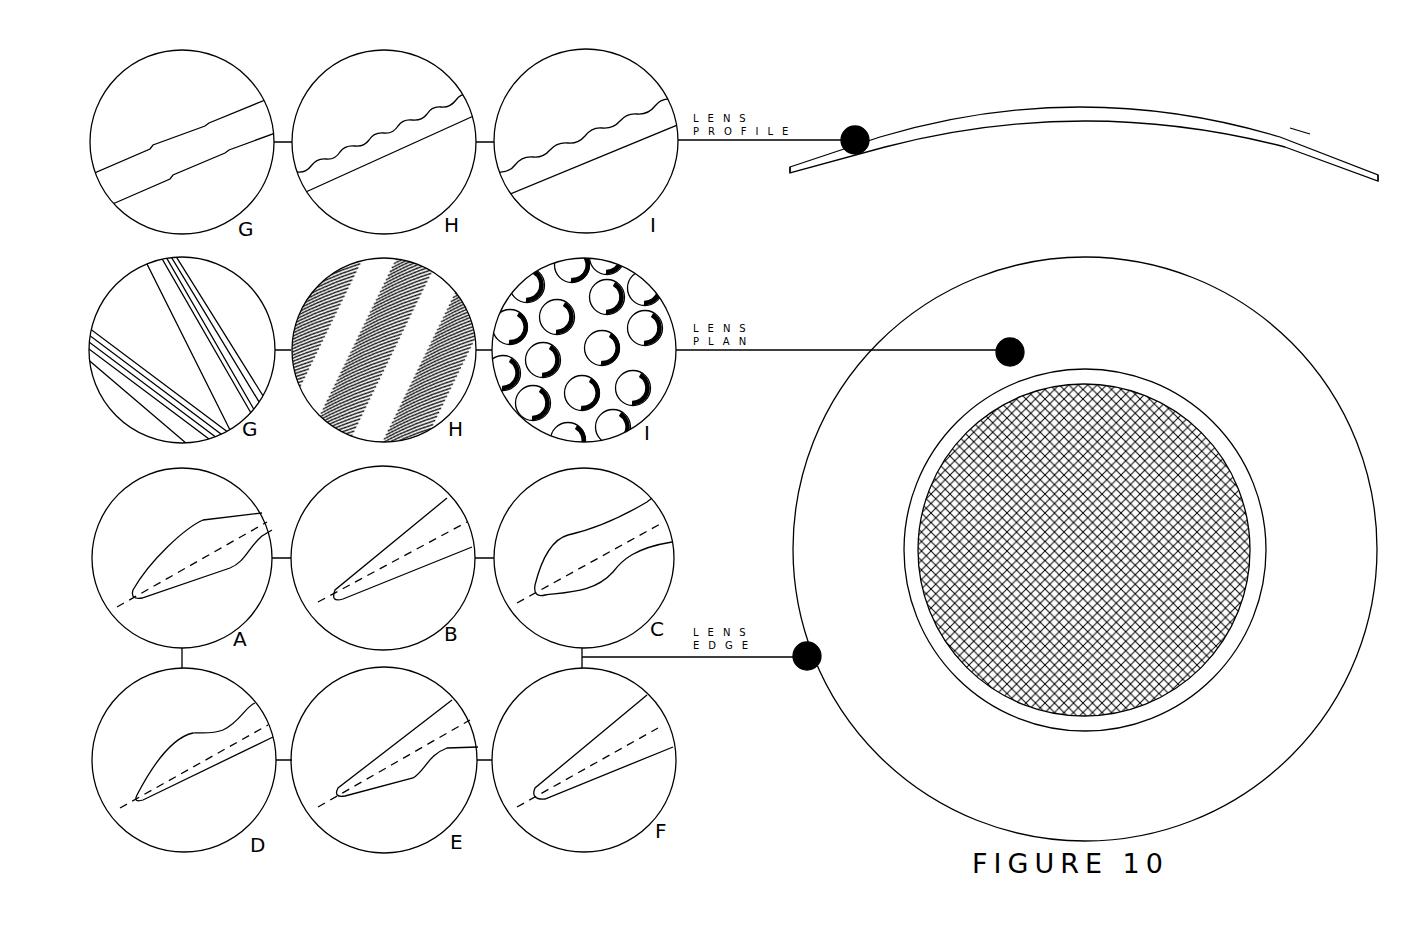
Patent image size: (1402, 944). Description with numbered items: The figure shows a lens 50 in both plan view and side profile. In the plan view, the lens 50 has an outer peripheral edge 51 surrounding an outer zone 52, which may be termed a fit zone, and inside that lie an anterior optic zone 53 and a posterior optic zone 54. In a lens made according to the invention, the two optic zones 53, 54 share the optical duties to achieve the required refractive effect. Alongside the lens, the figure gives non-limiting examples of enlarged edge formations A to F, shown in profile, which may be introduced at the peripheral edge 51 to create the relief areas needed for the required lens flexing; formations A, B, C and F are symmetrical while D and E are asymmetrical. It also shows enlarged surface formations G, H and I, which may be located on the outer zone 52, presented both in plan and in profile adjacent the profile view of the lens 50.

The lens 50 is at (989, 85).
The outer peripheral edge 51 is at (790, 173).
The outer zone 52 is at (1308, 140).
The anterior optic zone 53 is at (1163, 699).
The posterior optic zone 54 is at (1009, 542).